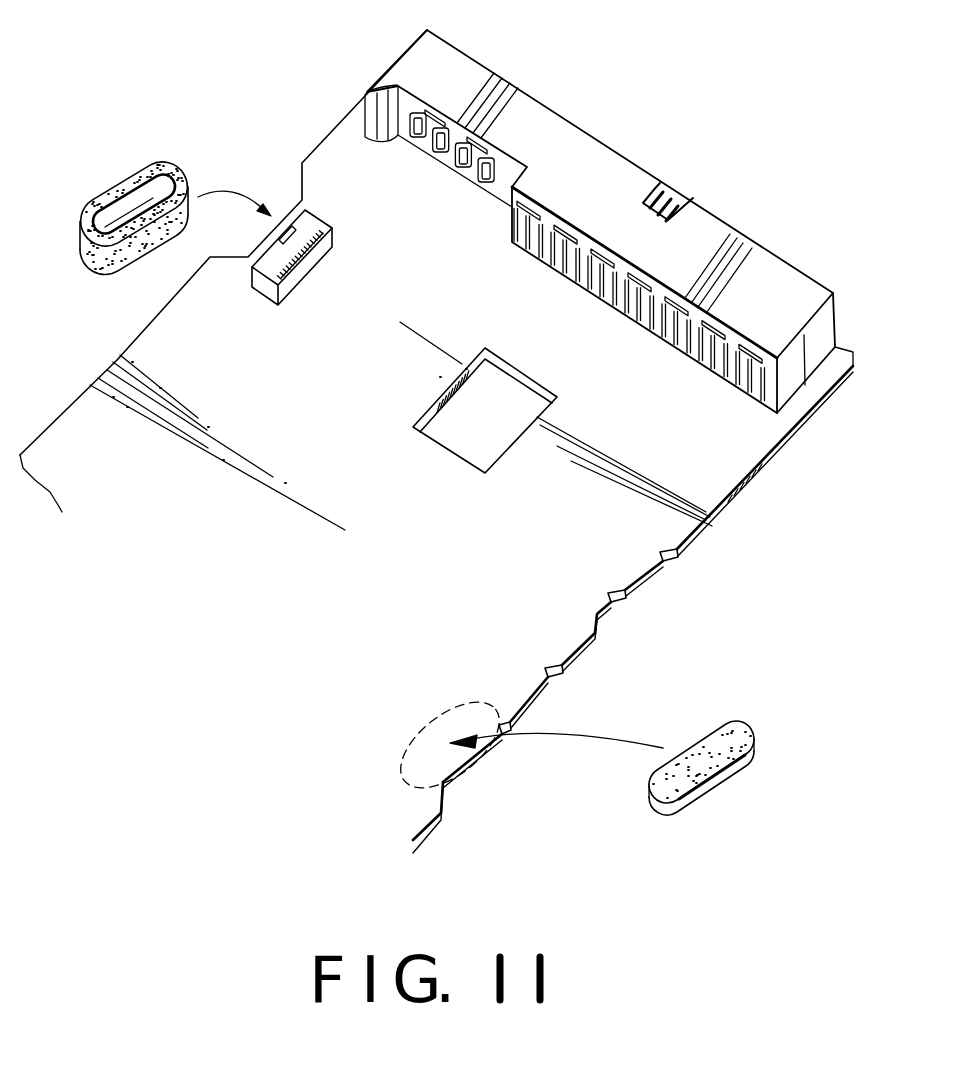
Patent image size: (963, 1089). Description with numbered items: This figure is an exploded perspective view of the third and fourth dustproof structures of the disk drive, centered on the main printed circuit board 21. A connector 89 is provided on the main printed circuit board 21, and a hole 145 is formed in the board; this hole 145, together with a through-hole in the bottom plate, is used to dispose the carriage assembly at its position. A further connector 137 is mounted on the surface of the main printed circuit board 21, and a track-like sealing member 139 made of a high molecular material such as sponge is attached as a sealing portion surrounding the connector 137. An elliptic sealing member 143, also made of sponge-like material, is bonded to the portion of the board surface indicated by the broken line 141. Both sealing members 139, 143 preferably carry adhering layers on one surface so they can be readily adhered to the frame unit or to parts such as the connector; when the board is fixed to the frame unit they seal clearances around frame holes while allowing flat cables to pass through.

The main printed circuit board 21 is at (786, 478).
The connector 89 is at (603, 140).
The connector 137 is at (313, 260).
The track-like sealing member 139 is at (152, 162).
The cutout region of board edge 141 is at (430, 733).
The elliptic sealing member 143 is at (747, 728).
The hole 145 is at (520, 370).